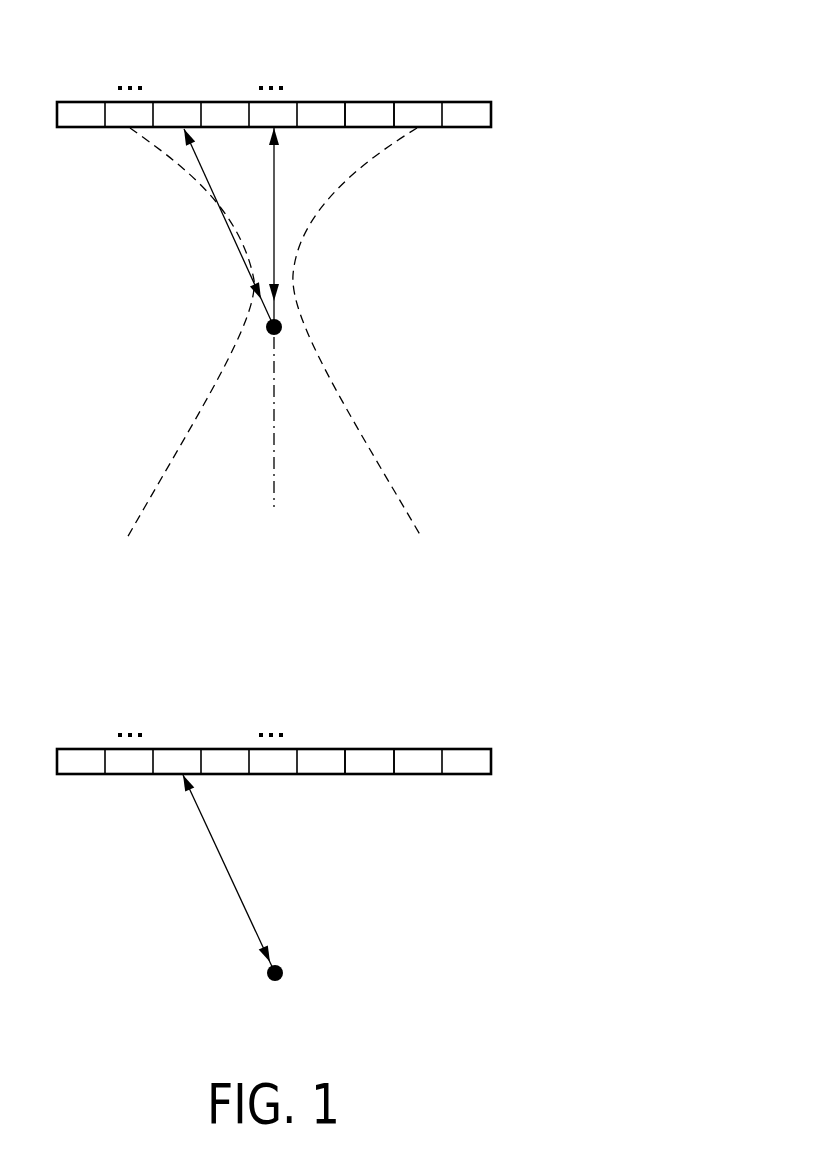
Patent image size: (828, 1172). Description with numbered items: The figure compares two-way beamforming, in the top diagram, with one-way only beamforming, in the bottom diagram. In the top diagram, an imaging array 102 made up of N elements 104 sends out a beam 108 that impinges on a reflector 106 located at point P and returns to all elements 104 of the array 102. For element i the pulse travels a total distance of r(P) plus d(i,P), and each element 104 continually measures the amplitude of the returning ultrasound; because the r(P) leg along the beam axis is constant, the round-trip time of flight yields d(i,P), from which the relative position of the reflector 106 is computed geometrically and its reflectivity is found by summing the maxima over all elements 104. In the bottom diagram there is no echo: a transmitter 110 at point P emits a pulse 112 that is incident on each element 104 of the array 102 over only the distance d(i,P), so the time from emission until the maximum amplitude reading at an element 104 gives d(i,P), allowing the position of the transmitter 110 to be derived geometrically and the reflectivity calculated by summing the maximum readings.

The imaging array 102 is at (479, 153).
The element 104 is at (368, 102).
The reflector 106 is at (266, 327).
The beam 108 is at (184, 440).
The transmitter 110 is at (267, 975).
The pulse 112 is at (237, 887).